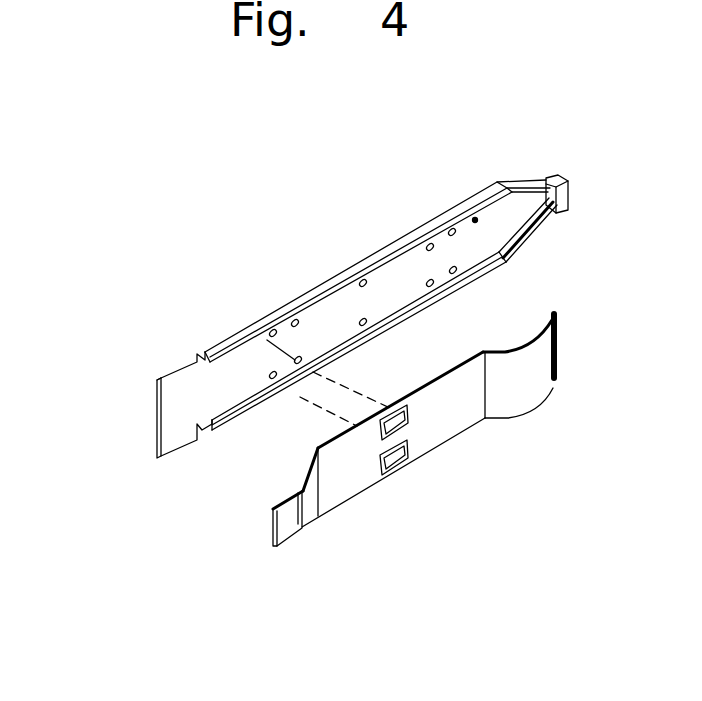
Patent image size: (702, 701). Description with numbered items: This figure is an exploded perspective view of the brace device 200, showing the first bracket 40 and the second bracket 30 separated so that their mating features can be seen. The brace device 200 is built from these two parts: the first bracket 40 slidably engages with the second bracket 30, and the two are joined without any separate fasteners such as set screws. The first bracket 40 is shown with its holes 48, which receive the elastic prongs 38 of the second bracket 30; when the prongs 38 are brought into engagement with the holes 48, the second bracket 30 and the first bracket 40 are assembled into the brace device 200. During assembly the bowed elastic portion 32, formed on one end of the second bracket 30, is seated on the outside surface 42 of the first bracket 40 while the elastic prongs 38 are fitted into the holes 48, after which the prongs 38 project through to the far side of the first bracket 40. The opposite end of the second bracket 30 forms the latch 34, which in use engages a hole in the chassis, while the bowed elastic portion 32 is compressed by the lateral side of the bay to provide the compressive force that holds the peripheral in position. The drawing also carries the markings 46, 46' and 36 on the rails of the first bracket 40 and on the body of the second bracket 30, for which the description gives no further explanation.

The brace device 200 is at (98, 181).
The first bracket 40 is at (134, 430).
The outside surface 42 is at (223, 405).
The upper rail 46 is at (377, 245).
The rail end 46' is at (542, 232).
The holes 48 is at (281, 376).
The second bracket 30 is at (252, 537).
The bowed elastic portion 32 is at (530, 405).
The latch 34 is at (289, 522).
The body face 36 is at (458, 423).
The elastic prongs 38 is at (393, 473).